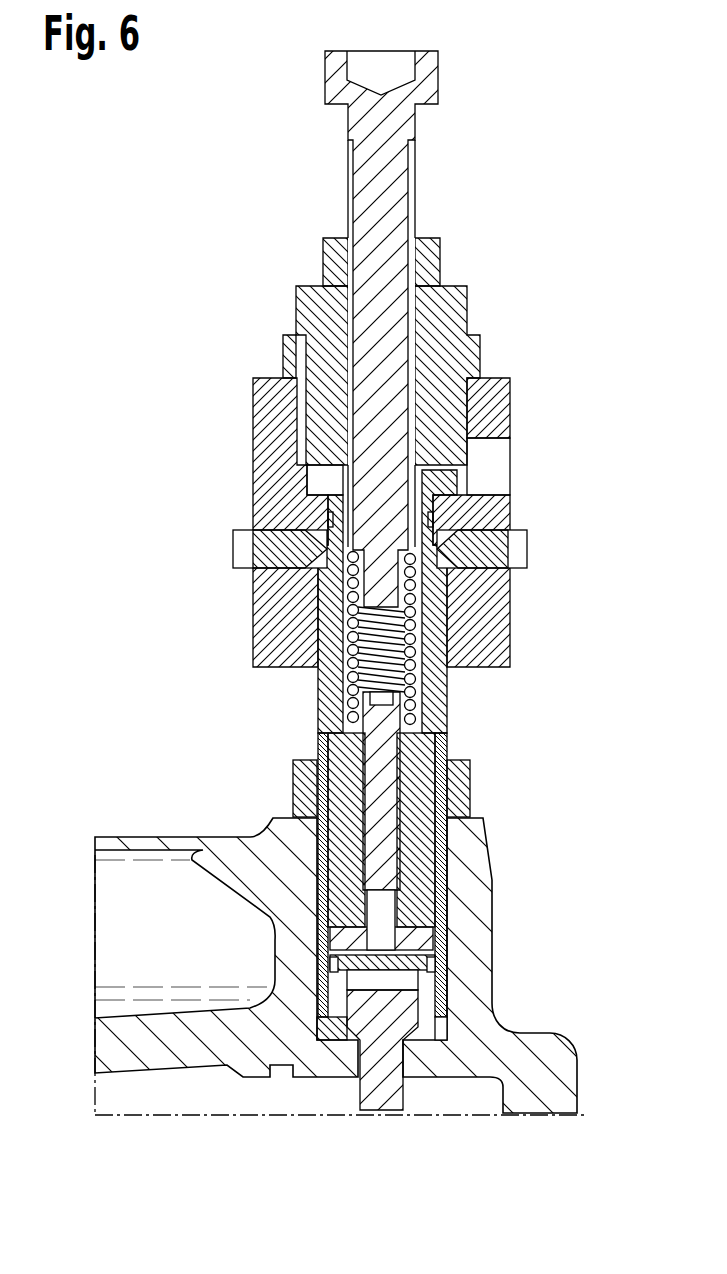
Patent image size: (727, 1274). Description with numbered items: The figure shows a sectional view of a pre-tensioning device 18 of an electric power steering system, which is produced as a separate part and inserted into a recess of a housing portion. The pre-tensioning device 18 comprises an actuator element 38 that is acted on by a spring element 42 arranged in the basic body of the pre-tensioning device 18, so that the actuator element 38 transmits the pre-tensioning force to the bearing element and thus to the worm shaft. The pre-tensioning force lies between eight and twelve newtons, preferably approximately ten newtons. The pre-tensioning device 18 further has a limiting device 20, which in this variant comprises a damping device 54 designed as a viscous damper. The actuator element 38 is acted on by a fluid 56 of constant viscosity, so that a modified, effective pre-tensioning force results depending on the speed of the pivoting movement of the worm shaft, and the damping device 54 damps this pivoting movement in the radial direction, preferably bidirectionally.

The pre-tensioning device 18 is at (527, 637).
The limiting device 20 is at (458, 958).
The actuator element 38 is at (377, 1087).
The spring element 42 is at (370, 670).
The damping device 54 is at (365, 888).
The fluid 56 is at (380, 913).